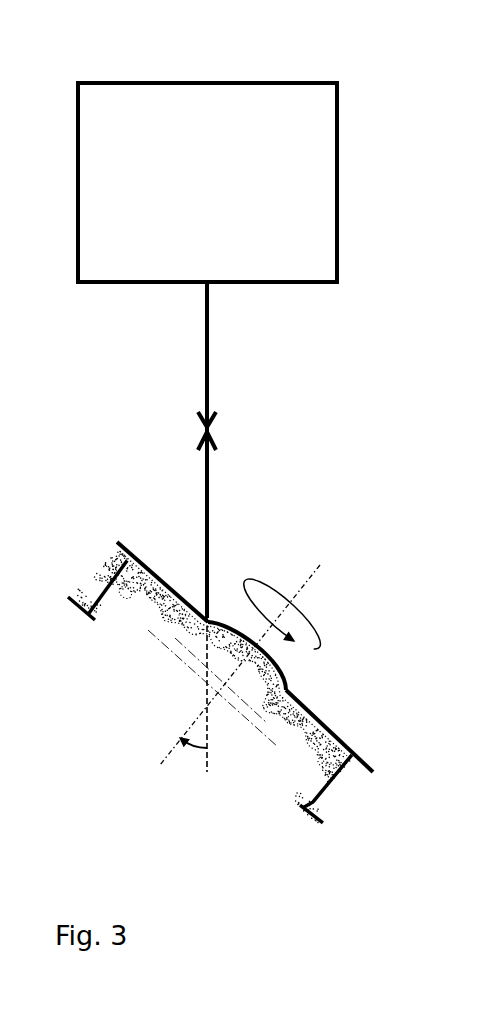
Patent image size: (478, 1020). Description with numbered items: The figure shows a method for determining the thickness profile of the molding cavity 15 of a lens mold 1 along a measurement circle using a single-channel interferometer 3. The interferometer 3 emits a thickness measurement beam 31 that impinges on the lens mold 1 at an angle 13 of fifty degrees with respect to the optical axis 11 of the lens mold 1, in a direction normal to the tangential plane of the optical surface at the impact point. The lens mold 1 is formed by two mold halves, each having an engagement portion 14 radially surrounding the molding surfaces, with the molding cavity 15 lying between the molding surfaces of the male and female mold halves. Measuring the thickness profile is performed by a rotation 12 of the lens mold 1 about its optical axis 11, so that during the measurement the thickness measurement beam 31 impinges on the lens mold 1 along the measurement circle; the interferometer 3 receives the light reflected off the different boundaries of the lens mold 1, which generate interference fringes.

The lens mold 1 is at (233, 733).
The interferometer 3 is at (147, 283).
The thickness measurement beam 31 is at (207, 472).
The optical axis 11 is at (308, 582).
The rotation 12 is at (318, 628).
The angle 13 is at (193, 750).
The engagement portion 14 is at (113, 624).
The molding cavity 15 is at (285, 684).